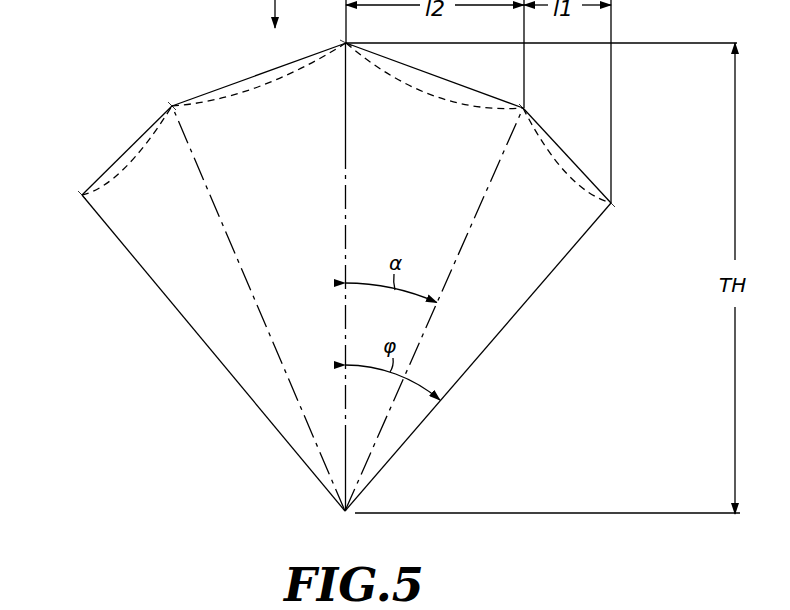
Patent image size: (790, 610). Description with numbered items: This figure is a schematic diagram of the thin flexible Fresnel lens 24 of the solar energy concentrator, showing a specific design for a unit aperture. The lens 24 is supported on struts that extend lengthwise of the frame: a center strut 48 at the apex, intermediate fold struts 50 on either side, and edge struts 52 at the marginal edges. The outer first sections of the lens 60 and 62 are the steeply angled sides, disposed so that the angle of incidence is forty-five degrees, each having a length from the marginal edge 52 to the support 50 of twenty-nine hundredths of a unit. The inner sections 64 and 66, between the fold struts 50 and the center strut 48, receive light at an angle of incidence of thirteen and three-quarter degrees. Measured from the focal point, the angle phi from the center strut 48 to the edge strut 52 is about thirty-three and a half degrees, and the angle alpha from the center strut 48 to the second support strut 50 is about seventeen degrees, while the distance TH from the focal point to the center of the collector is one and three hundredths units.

The thin flexible Fresnel lens 24 is at (261, 70).
The center strut 48 is at (346, 42).
The intermediate fold strut 50 is at (171, 105).
The edge strut 52 is at (82, 197).
The first lens section 60 is at (566, 155).
The first lens section 62 is at (126, 150).
The lens section 64 is at (458, 84).
The lens section 66 is at (213, 90).